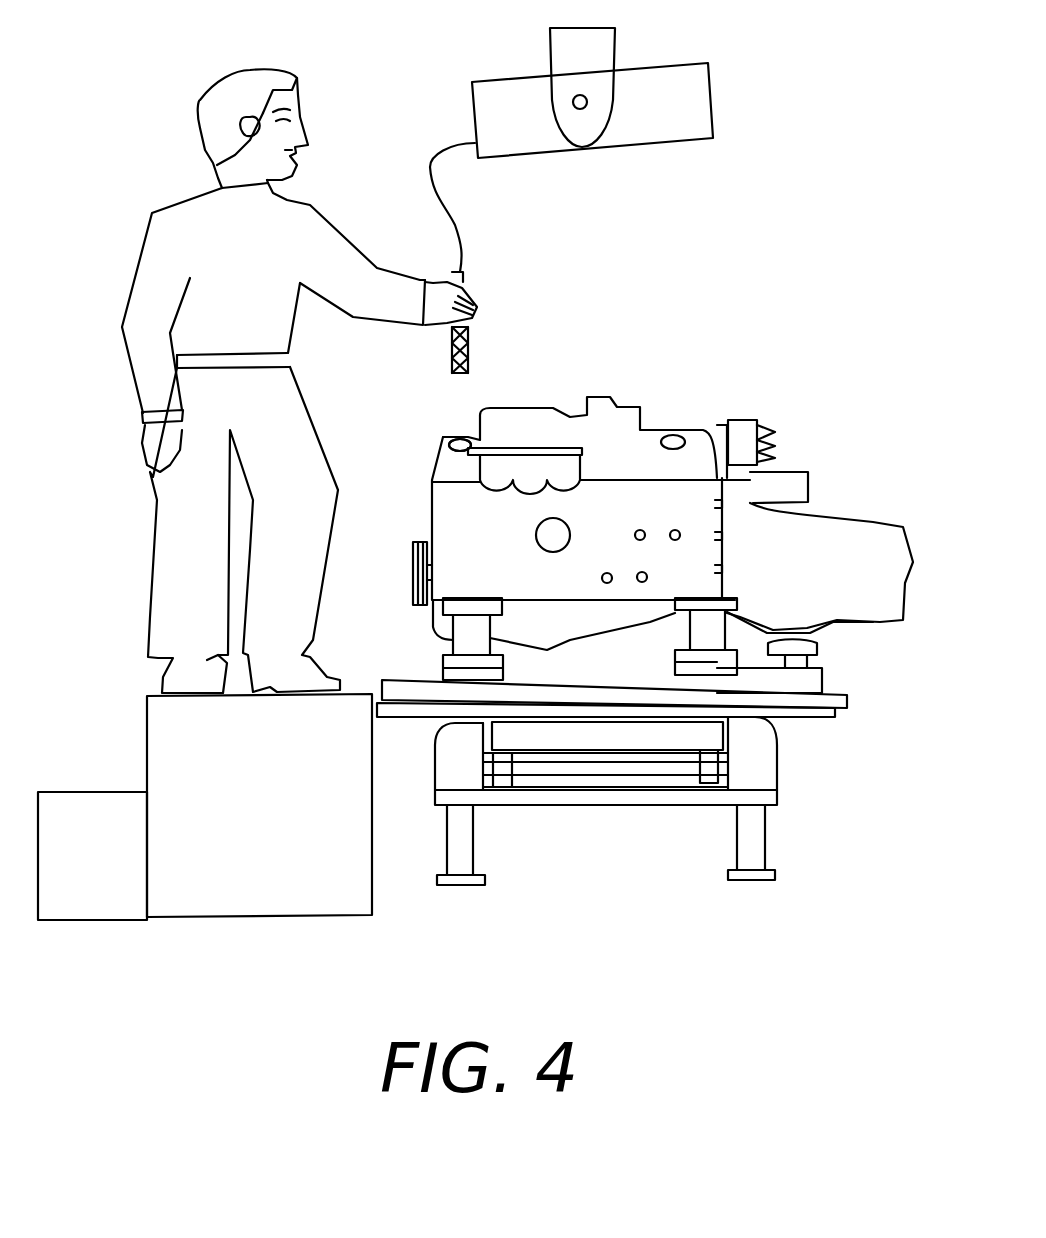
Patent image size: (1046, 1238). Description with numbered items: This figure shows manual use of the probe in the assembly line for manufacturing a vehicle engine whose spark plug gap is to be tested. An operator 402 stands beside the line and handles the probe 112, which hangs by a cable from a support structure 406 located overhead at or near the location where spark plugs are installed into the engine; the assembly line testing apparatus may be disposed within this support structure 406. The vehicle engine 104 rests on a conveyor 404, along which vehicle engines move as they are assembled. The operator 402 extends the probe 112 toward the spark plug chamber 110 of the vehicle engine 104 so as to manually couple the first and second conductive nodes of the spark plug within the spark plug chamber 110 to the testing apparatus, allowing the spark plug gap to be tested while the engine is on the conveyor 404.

The vehicle engine 104 is at (428, 508).
The spark plug chamber 110 is at (453, 437).
The probe 112 is at (480, 342).
The operator 402 is at (163, 195).
The conveyor 404 is at (788, 762).
The support structure 406 is at (682, 58).